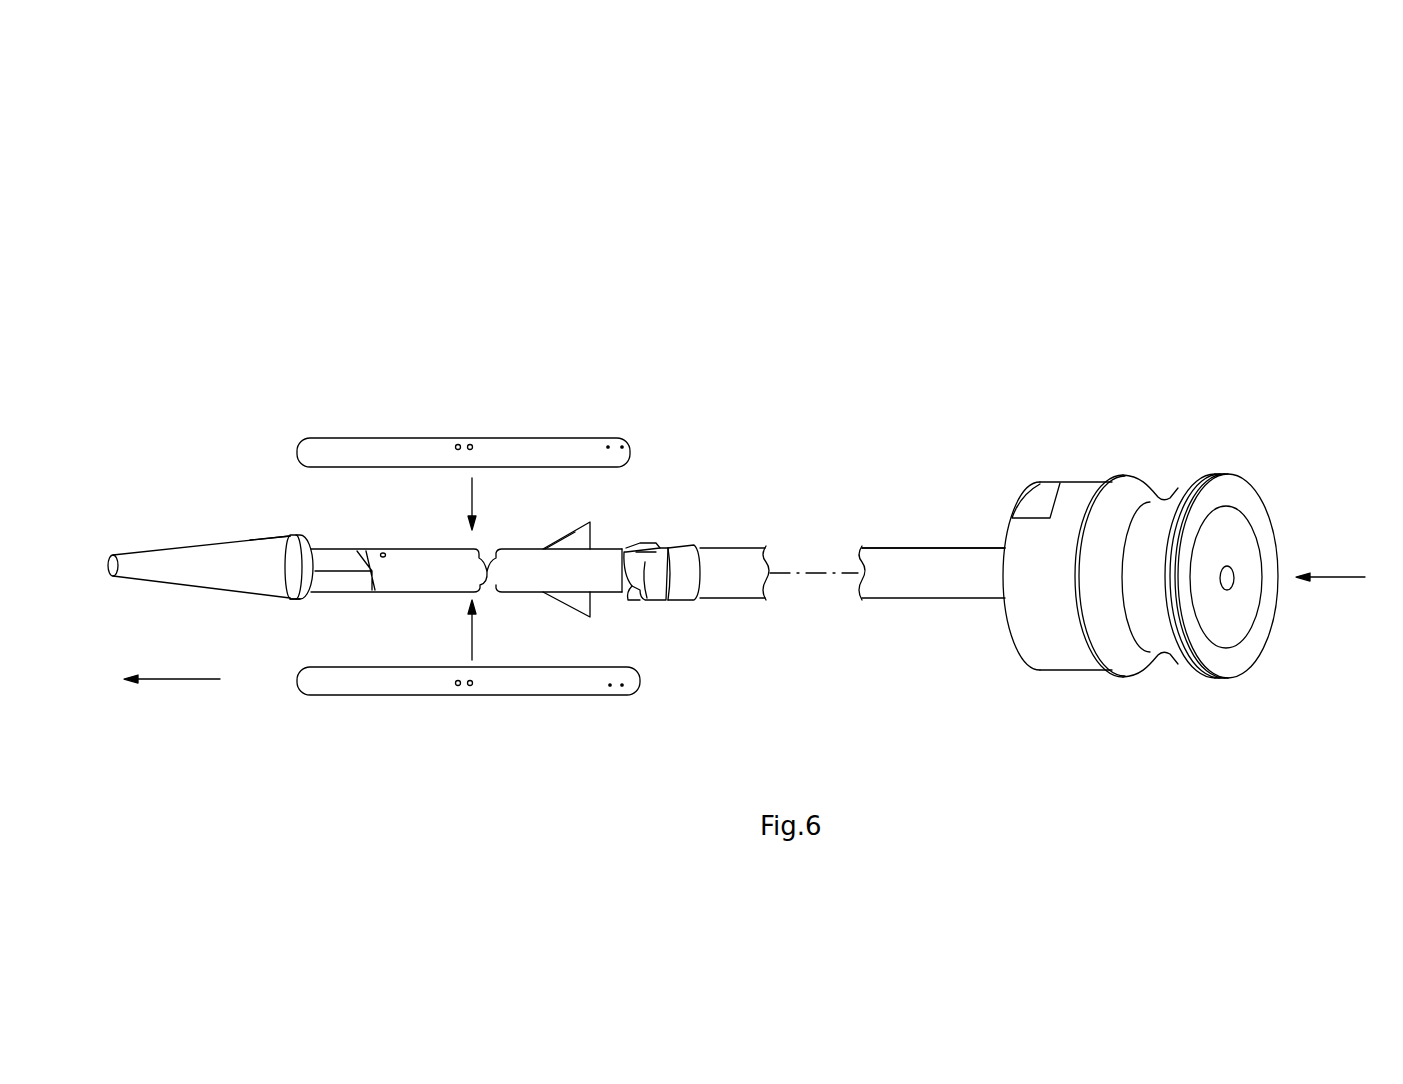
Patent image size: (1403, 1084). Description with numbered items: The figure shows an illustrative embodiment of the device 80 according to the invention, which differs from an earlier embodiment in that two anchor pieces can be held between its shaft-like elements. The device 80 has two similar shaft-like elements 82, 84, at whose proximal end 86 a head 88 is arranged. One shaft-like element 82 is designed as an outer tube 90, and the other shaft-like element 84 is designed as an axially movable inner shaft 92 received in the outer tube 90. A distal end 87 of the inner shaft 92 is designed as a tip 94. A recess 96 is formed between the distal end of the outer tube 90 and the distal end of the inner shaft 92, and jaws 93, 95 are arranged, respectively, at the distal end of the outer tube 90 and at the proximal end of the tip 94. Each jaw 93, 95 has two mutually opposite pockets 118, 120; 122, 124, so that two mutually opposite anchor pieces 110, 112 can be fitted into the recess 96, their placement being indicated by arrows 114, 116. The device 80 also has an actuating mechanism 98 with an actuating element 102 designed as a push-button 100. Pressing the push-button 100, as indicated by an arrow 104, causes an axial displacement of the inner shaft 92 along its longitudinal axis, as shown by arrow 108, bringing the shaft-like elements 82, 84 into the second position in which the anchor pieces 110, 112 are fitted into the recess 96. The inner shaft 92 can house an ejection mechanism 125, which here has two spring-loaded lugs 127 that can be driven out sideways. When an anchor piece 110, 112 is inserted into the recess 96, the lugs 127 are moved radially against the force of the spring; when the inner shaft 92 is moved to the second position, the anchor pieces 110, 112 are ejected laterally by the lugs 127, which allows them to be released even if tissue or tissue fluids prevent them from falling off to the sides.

The device 80 is at (662, 318).
The shaft-like element 82 is at (722, 600).
The shaft-like element 84 is at (608, 598).
The proximal end 86 is at (1191, 464).
The distal end 87 is at (172, 382).
The head 88 is at (1176, 419).
The outer tube 90 is at (748, 598).
The inner shaft 92 is at (517, 594).
The jaw 93 is at (690, 548).
The tip 94 is at (172, 568).
The jaw 95 is at (290, 537).
The recess 96 is at (392, 515).
The actuating mechanism 98 is at (1280, 485).
The push-button 100 is at (1228, 635).
The actuating element 102 is at (1262, 612).
The arrow 104 is at (1337, 573).
The arrow 108 is at (170, 680).
The anchor piece 110 is at (530, 450).
The anchor piece 112 is at (530, 678).
The arrow 114 is at (485, 490).
The arrow 116 is at (470, 640).
The pocket 118 is at (648, 548).
The pocket 120 is at (624, 598).
The pocket 122 is at (308, 540).
The pocket 124 is at (300, 600).
The ejection mechanism 125 is at (595, 534).
The spring-loaded lugs 127 is at (580, 535).